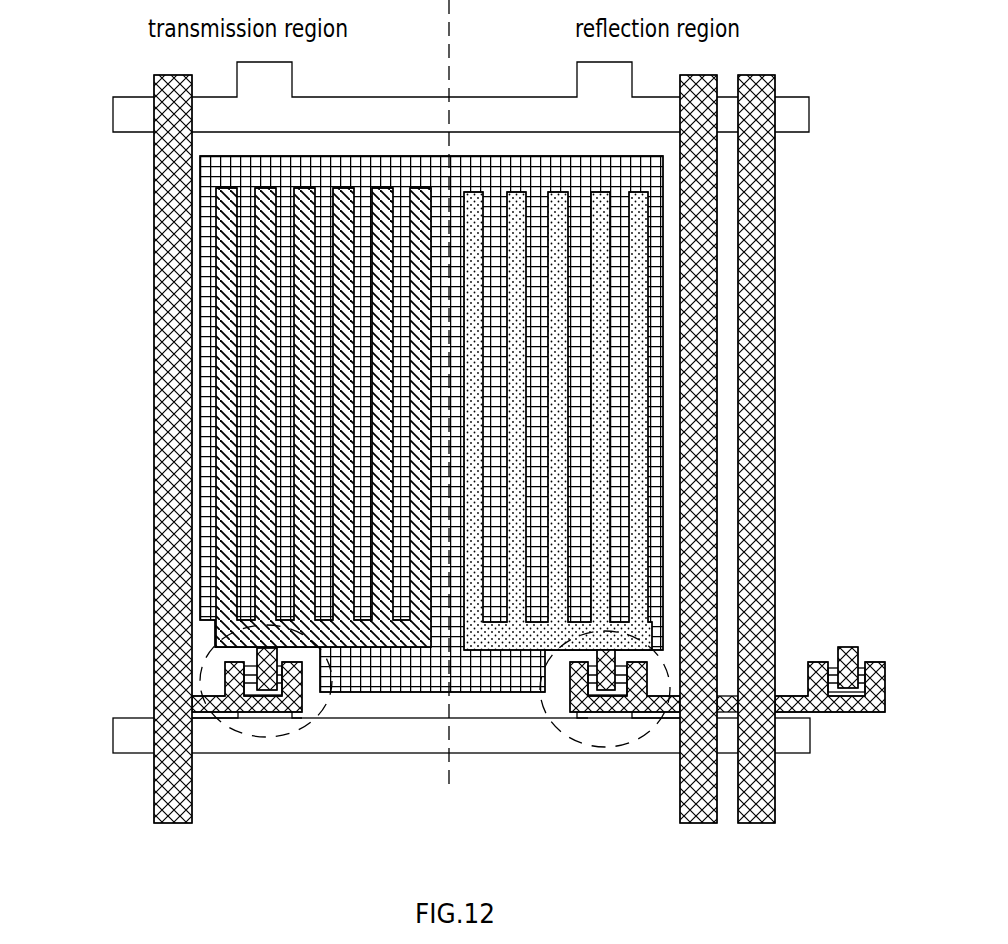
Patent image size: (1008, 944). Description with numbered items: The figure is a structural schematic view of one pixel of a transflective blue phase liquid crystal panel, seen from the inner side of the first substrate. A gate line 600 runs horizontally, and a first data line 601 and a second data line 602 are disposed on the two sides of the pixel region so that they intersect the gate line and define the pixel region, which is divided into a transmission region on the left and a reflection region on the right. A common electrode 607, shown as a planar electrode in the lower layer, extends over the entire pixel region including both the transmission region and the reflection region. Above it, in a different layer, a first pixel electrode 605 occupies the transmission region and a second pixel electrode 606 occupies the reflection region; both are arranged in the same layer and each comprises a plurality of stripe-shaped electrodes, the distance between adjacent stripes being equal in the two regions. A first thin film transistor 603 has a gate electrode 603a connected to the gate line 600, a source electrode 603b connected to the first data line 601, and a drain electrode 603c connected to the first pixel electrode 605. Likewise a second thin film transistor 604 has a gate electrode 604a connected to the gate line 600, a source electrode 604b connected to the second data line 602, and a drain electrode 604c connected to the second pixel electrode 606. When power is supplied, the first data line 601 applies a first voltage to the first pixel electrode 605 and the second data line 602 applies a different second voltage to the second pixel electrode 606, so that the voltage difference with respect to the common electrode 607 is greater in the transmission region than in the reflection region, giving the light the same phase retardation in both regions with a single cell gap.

The gate line 600 is at (130, 730).
The first data line 601 is at (155, 812).
The second data line 602 is at (713, 822).
The first thin film transistor 603 is at (245, 727).
The gate electrode 603a is at (250, 715).
The source electrode 603b is at (275, 703).
The drain electrode 603c is at (298, 688).
The second thin film transistor 604 is at (650, 699).
The gate electrode 604a is at (622, 715).
The source electrode 604b is at (593, 712).
The drain electrode 604c is at (573, 688).
The first pixel electrode 605 is at (215, 428).
The second pixel electrode 606 is at (648, 457).
The common electrode 607 is at (647, 172).